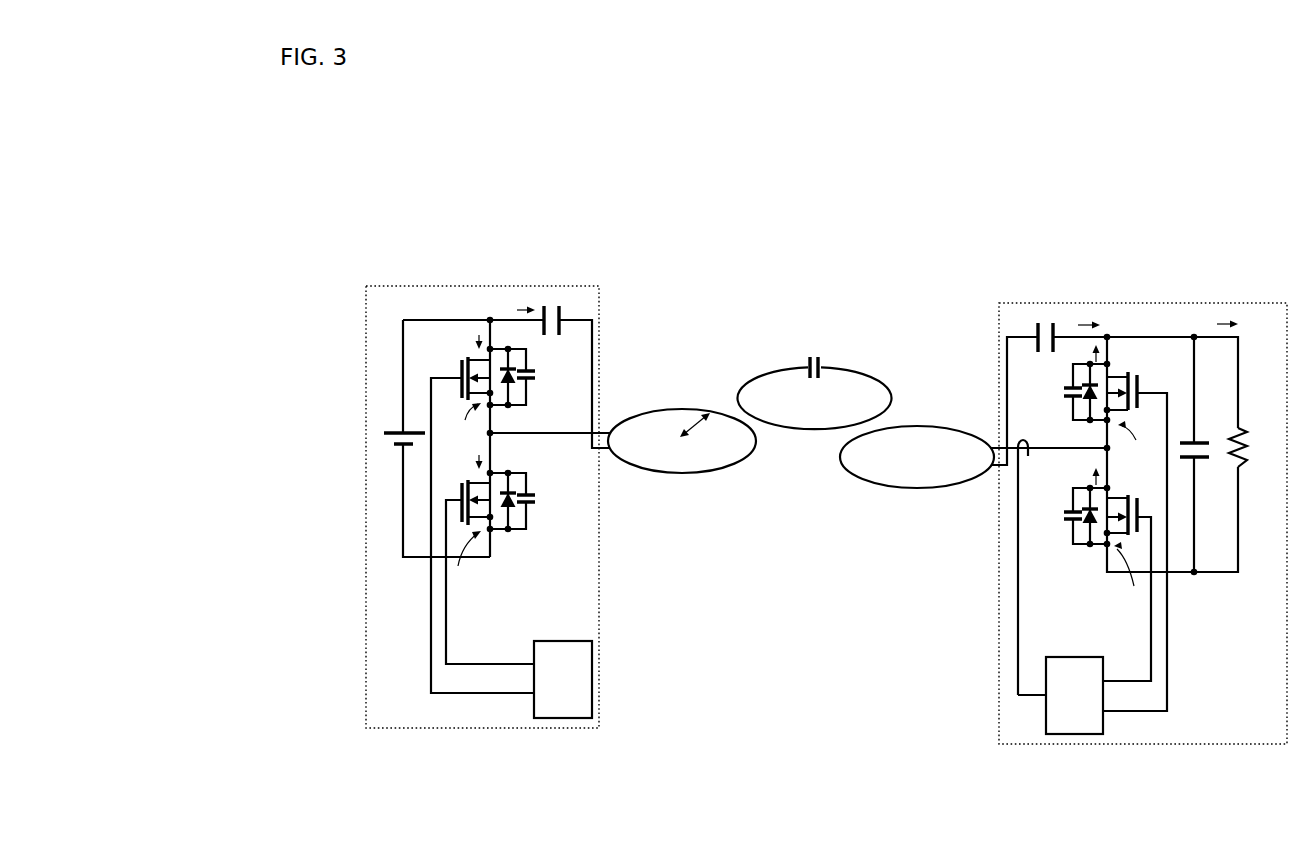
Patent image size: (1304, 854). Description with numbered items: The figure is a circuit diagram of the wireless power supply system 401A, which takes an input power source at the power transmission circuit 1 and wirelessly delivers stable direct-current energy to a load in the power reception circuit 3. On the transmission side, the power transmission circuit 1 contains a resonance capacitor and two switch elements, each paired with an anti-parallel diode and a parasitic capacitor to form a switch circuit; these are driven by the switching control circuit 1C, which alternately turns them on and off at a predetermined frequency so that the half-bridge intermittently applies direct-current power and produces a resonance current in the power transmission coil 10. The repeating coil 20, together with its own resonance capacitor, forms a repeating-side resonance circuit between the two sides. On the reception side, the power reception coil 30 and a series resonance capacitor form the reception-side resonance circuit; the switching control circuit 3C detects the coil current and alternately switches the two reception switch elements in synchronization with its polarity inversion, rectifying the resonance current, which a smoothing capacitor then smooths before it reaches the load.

The power transmission circuit 1 is at (492, 286).
The power reception circuit 3 is at (1150, 303).
The power transmission coil 10 is at (665, 410).
The repeating coil 20 is at (850, 368).
The power reception coil 30 is at (917, 426).
The switching control circuit 1C is at (570, 718).
The switching control circuit 3C is at (1074, 734).
The wireless power supply system 401A is at (1270, 179).